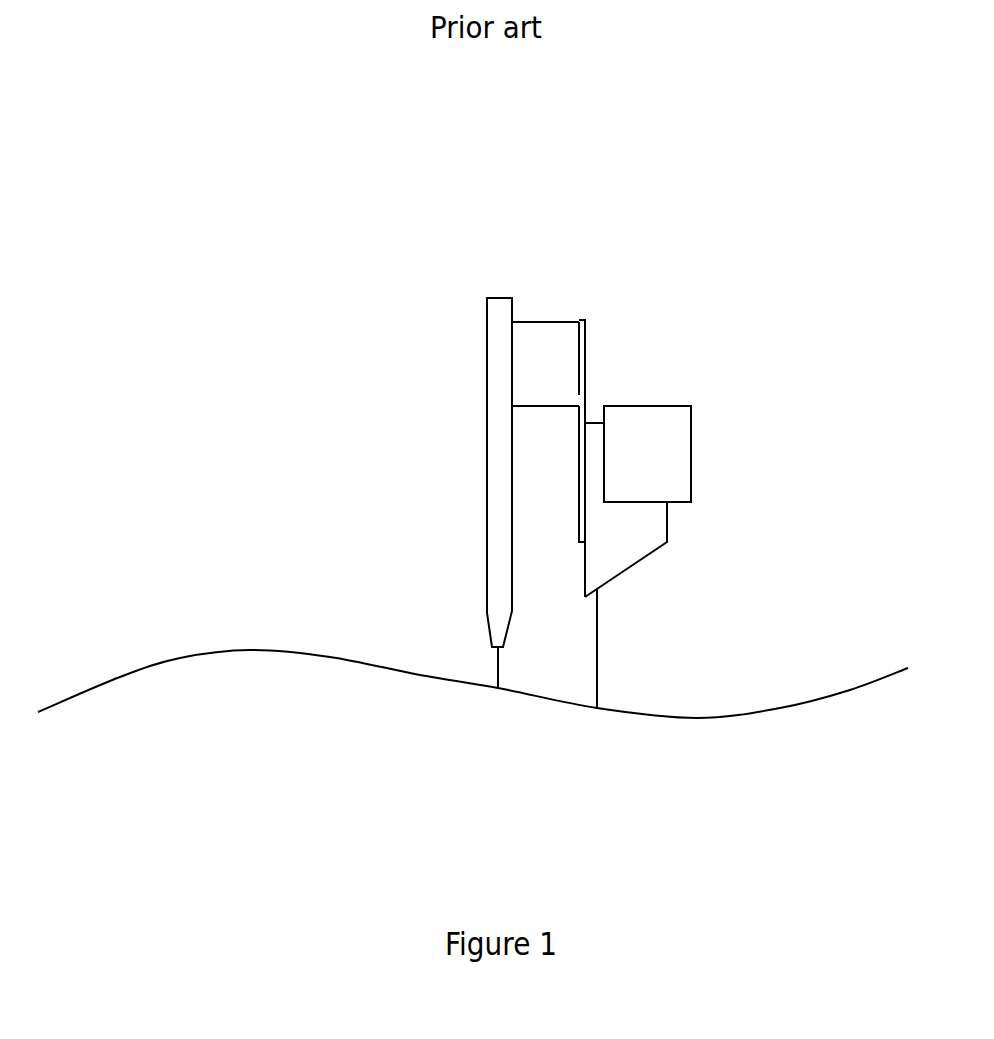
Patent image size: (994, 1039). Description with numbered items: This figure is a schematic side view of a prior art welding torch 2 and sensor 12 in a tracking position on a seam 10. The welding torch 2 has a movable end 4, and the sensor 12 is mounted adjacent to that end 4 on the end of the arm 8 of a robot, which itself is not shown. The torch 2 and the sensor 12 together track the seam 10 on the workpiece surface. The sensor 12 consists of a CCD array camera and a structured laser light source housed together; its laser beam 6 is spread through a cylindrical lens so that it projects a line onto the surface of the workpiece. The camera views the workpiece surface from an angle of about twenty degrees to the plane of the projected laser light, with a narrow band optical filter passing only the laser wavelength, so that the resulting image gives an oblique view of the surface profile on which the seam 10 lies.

The welding torch 2 is at (495, 562).
The movable end 4 is at (498, 650).
The laser beam 6 is at (598, 647).
The arm 8 is at (558, 342).
The seam 10 is at (780, 703).
The sensor 12 is at (638, 540).